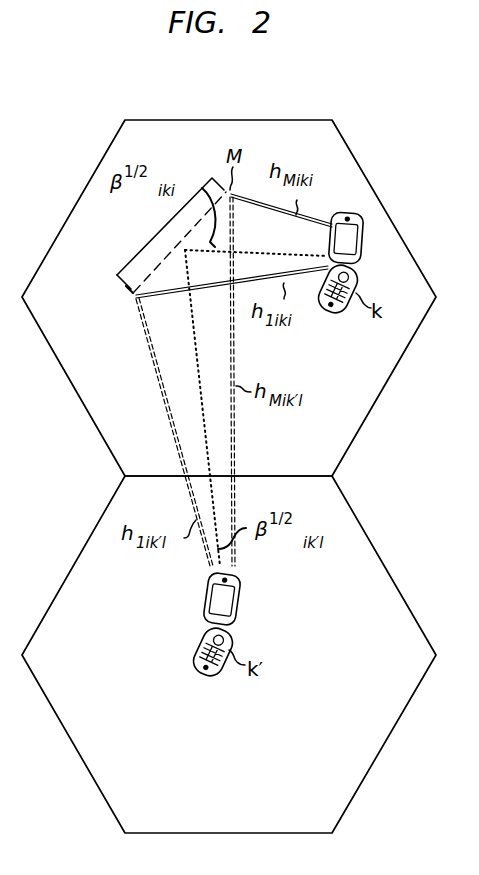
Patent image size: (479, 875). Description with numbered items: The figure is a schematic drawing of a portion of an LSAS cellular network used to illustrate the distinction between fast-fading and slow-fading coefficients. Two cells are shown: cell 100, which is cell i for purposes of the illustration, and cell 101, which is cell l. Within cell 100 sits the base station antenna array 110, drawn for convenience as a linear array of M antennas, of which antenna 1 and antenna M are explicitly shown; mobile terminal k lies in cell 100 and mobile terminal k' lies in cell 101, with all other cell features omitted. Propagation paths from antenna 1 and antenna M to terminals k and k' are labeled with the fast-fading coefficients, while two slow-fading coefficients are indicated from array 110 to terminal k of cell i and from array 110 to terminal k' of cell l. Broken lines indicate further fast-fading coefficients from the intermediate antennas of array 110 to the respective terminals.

The cell 100 is at (346, 139).
The cell 101 is at (114, 815).
The base station antenna array 110 is at (153, 241).
The antenna 1 is at (120, 289).